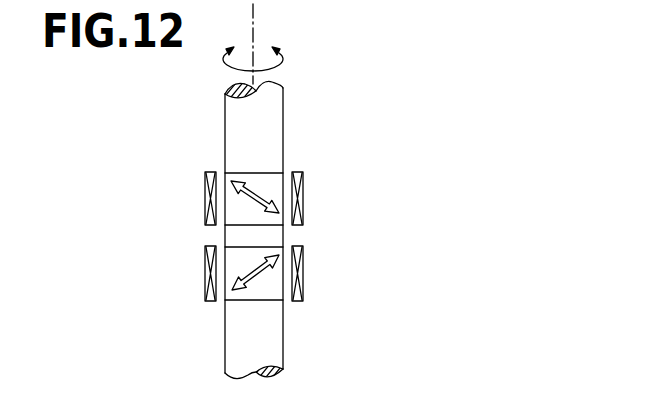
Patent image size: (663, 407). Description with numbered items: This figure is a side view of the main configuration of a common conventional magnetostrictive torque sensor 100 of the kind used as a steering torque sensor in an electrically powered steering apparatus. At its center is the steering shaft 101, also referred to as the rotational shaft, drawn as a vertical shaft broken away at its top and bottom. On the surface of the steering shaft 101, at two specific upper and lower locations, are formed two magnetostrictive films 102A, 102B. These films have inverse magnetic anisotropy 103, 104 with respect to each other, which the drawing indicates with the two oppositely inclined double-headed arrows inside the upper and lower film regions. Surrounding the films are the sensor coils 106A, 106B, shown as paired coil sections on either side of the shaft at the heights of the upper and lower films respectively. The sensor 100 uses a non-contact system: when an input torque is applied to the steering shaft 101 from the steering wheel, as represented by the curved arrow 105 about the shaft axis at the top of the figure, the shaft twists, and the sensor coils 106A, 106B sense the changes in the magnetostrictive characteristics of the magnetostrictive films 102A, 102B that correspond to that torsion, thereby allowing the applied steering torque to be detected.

The magnetostrictive torque sensor 100 is at (401, 164).
The steering shaft 101 is at (269, 107).
The magnetostrictive film 102A is at (265, 184).
The magnetostrictive film 102B is at (267, 293).
The magnetic anisotropy 103 is at (259, 194).
The magnetic anisotropy 104 is at (258, 280).
The arrow 105 is at (271, 50).
The sensor coil 106A is at (303, 197).
The sensor coil 106B is at (303, 274).